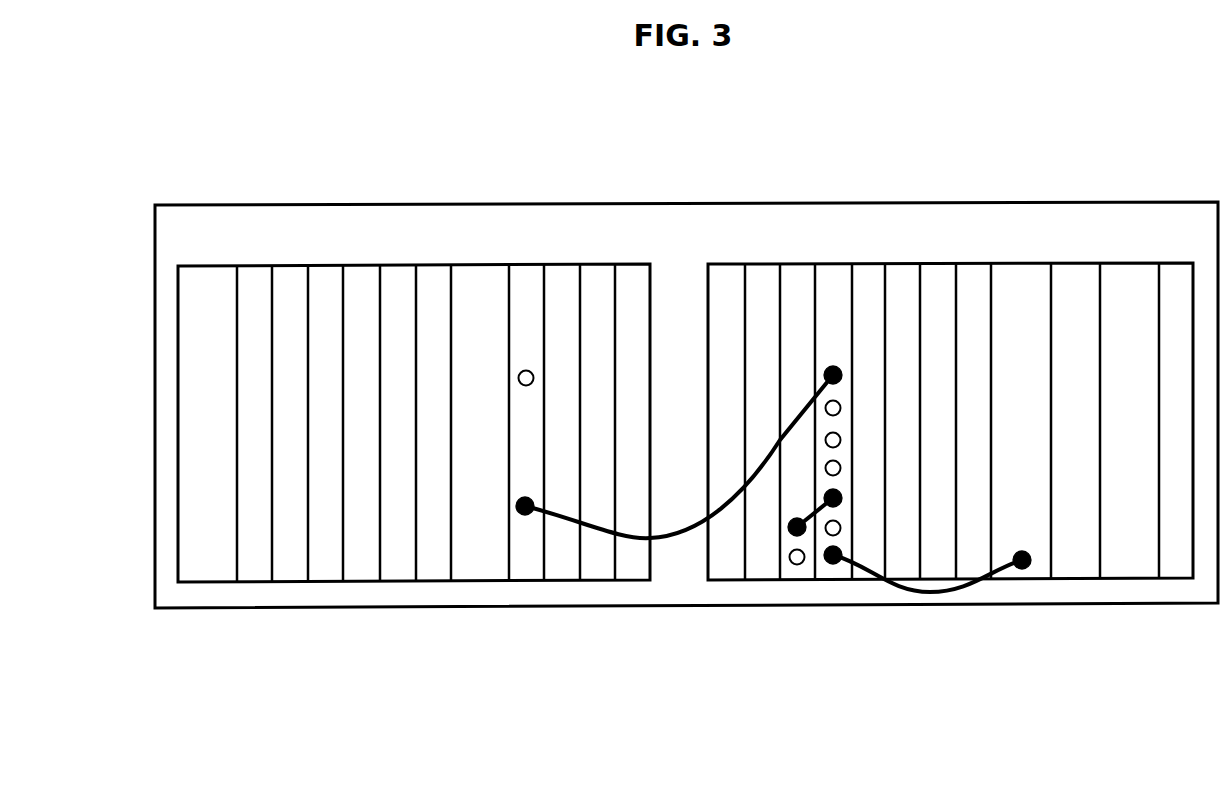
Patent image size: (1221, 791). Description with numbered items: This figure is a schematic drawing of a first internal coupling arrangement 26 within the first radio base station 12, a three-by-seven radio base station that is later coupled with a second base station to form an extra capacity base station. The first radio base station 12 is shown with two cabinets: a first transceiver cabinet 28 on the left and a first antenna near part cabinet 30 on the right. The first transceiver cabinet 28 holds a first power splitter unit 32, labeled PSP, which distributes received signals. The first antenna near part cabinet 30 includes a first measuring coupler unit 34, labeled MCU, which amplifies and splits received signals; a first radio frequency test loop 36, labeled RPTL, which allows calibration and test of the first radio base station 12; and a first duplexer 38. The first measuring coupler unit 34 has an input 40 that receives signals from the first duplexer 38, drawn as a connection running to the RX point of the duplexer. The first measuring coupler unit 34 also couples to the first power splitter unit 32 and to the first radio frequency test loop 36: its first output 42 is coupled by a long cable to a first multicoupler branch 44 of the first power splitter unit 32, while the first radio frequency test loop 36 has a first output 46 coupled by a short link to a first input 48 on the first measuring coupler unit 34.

The first radio base station 12 is at (287, 205).
The first internal coupling arrangement 26 is at (602, 140).
The first transceiver cabinet 28 is at (249, 583).
The first antenna near part cabinet 30 is at (1116, 580).
The first power splitter unit 32 is at (522, 553).
The first measuring coupler unit 34 is at (833, 270).
The first radio frequency test loop 36 is at (795, 268).
The first duplexer 38 is at (1020, 263).
The input 40 is at (833, 565).
The first output 42 is at (845, 396).
The first multicoupler branch 44 is at (514, 515).
The first output 46 is at (789, 522).
The first input 48 is at (828, 490).